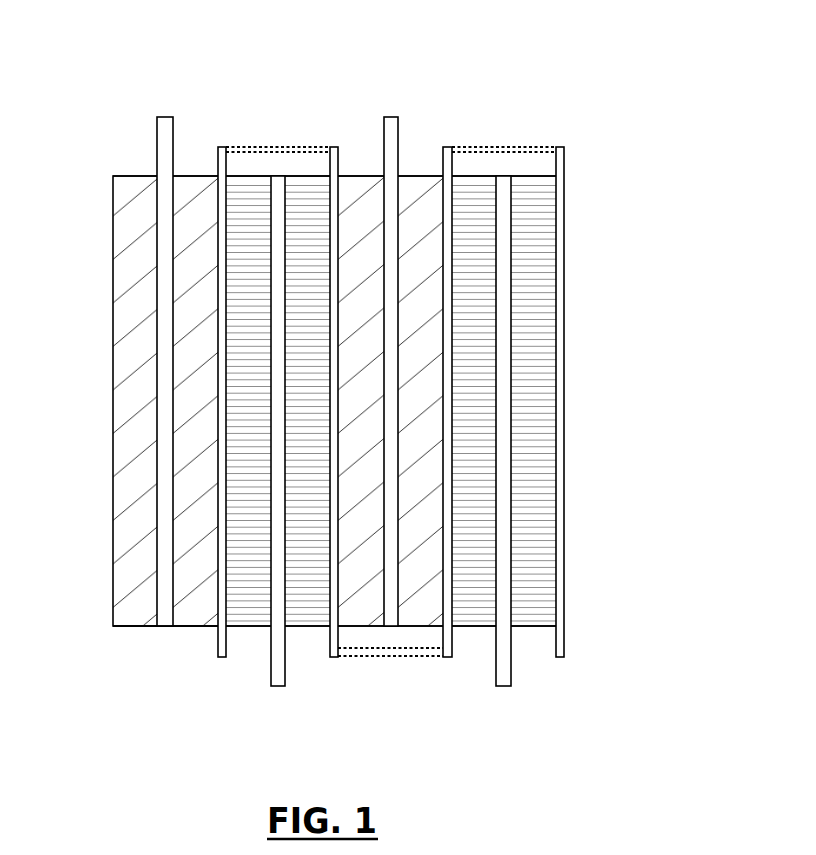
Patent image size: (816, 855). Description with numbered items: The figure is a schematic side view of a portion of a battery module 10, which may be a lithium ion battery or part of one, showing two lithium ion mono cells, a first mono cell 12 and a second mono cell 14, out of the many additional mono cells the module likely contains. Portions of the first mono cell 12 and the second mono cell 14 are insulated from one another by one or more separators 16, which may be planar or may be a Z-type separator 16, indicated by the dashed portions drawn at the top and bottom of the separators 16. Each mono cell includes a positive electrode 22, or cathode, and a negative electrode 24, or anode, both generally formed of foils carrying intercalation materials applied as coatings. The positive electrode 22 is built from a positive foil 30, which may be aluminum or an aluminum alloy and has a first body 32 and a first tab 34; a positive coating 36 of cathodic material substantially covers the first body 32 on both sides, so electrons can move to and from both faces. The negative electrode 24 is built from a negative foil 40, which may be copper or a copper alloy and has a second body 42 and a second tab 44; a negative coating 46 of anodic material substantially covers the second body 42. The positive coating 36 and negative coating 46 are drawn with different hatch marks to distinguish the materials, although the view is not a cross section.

The battery module 10 is at (673, 70).
The first mono cell 12 is at (113, 88).
The second mono cell 14 is at (557, 88).
The separator 16 is at (560, 218).
The positive electrode 22 is at (103, 150).
The negative electrode 24 is at (560, 130).
The positive foil 30 is at (165, 628).
The first body 32 is at (163, 462).
The first tab 34 is at (170, 153).
The positive coating 36 is at (360, 185).
The negative foil 40 is at (505, 180).
The second body 42 is at (503, 401).
The second tab 44 is at (280, 647).
The negative coating 46 is at (302, 185).